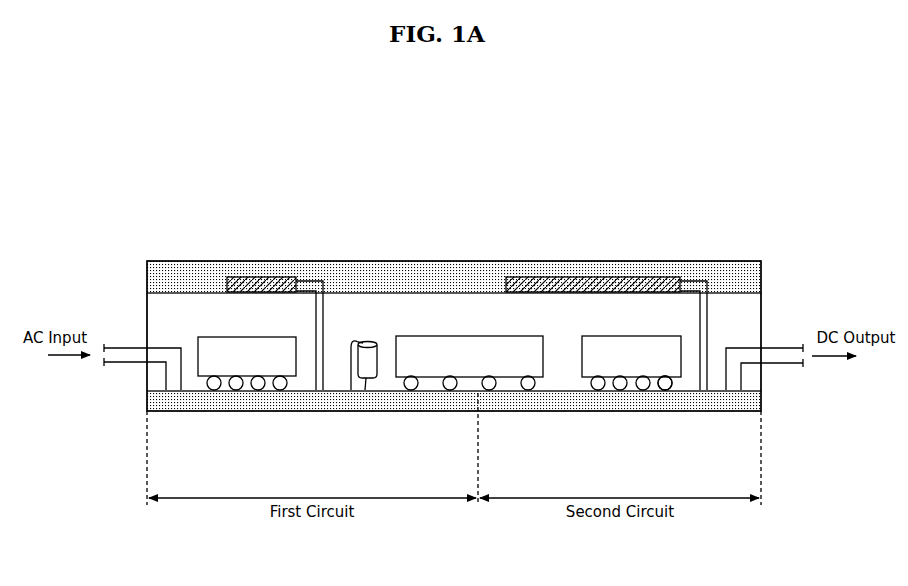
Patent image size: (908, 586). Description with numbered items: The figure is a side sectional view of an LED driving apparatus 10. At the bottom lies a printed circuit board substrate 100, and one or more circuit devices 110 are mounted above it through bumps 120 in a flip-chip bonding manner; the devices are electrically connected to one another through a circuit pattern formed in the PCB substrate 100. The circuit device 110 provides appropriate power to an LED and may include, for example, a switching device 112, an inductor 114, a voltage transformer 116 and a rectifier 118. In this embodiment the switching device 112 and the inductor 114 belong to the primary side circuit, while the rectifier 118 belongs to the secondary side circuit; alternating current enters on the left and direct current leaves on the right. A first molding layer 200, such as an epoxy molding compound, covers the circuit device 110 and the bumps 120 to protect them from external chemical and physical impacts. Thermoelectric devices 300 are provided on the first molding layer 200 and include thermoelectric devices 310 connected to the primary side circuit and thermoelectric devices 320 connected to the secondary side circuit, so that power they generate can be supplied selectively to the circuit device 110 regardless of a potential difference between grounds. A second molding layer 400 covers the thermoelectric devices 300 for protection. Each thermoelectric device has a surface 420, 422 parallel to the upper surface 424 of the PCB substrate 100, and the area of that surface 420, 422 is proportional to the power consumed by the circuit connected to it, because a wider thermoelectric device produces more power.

The LED driving apparatus 10 is at (713, 169).
The printed circuit board substrate 100 is at (753, 401).
The first molding layer 200 is at (753, 310).
The thermoelectric devices 300 is at (453, 237).
The thermoelectric devices connected to the primary side circuit 310 is at (272, 279).
The thermoelectric devices connected to the secondary side circuit 320 is at (593, 256).
The second molding layer 400 is at (753, 275).
The surface of thermoelectric device 420 is at (628, 293).
The surface of thermoelectric device 422 is at (266, 293).
The upper surface of the PCB substrate 424 is at (747, 391).
The circuit device 110 is at (439, 409).
The switching device 112 is at (274, 368).
The inductor 114 is at (362, 368).
The voltage transformer 116 is at (437, 367).
The rectifier 118 is at (631, 388).
The bump 120 is at (663, 390).